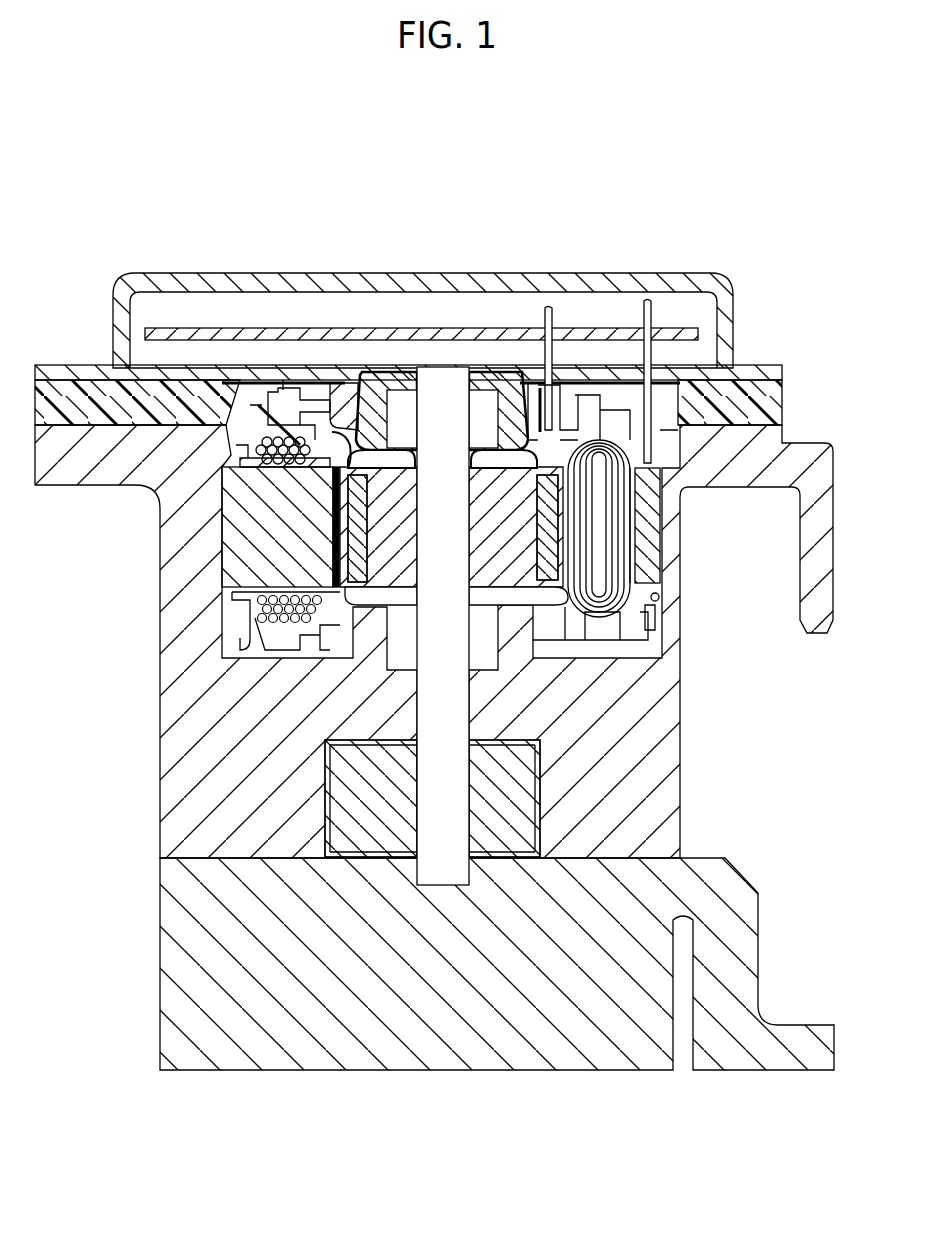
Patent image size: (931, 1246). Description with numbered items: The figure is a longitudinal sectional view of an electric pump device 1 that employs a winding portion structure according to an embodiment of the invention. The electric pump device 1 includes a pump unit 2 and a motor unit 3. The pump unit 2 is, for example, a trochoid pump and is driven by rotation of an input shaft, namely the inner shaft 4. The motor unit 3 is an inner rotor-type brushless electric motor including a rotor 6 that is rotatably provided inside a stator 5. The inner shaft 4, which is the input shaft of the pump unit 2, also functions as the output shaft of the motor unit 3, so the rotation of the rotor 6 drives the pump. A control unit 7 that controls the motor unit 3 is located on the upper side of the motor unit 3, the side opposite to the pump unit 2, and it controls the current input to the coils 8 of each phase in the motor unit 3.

The electric pump device 1 is at (708, 170).
The pump unit 2 is at (510, 805).
The motor unit 3 is at (657, 545).
The inner shaft 4 is at (450, 698).
The stator 5 is at (260, 530).
The rotor 6 is at (392, 563).
The control unit 7 is at (572, 330).
The coils 8 is at (262, 610).